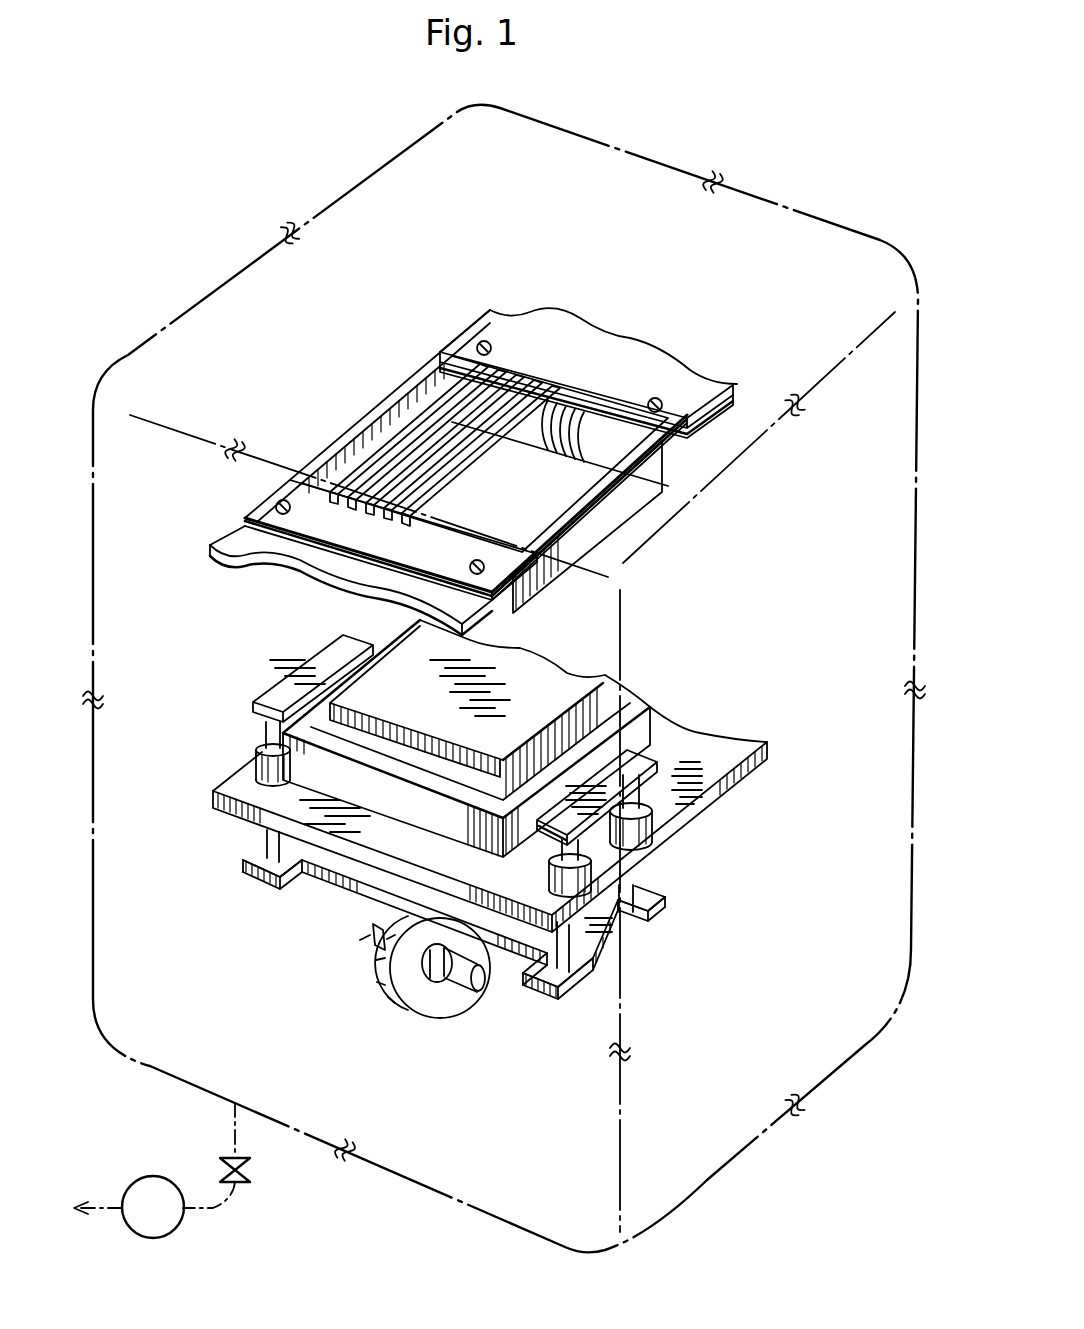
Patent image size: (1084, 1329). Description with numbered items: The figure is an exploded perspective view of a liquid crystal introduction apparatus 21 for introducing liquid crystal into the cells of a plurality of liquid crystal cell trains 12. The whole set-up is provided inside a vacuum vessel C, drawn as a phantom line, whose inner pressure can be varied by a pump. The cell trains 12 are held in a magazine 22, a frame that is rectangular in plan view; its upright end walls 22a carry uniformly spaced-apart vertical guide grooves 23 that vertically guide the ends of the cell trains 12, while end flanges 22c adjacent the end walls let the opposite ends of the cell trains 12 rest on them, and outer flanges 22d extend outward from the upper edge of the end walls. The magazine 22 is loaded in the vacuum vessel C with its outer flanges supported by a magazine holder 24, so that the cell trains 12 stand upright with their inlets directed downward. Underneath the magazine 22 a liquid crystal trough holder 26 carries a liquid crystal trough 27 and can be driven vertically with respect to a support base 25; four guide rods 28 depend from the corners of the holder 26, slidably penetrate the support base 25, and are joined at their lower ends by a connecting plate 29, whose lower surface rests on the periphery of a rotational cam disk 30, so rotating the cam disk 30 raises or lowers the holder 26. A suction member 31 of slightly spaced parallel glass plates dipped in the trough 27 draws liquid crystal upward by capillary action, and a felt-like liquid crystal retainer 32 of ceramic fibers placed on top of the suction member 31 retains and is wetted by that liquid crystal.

The vacuum vessel C is at (253, 257).
The liquid crystal cell train 12 is at (445, 415).
The liquid crystal introduction apparatus 21 is at (295, 351).
The magazine 22 is at (479, 461).
The end wall 22a is at (620, 430).
The end flange 22c is at (660, 522).
The outer flange 22d is at (640, 400).
The vertical guide groove 23 is at (587, 407).
The magazine holder 24 is at (713, 397).
The support base 25 is at (717, 770).
The liquid crystal trough holder 26 is at (642, 800).
The liquid crystal trough 27 is at (640, 730).
The guide rod 28 is at (257, 875).
The connecting plate 29 is at (523, 952).
The rotational cam disk 30 is at (418, 1003).
The suction member 31 is at (613, 688).
The liquid crystal retainer 32 is at (420, 683).